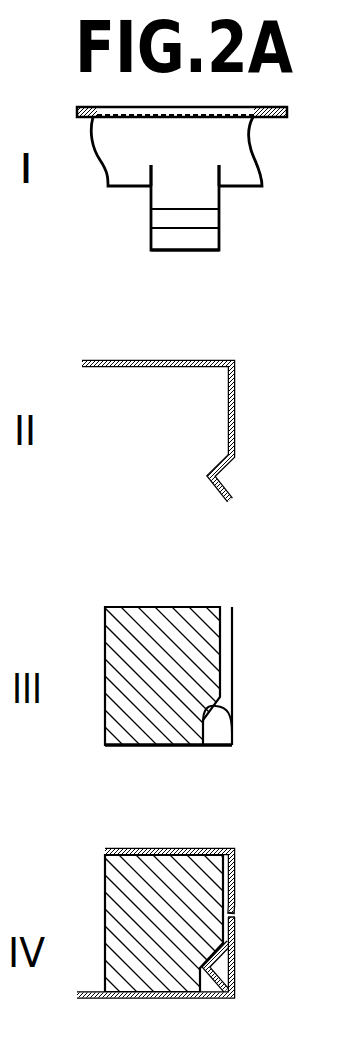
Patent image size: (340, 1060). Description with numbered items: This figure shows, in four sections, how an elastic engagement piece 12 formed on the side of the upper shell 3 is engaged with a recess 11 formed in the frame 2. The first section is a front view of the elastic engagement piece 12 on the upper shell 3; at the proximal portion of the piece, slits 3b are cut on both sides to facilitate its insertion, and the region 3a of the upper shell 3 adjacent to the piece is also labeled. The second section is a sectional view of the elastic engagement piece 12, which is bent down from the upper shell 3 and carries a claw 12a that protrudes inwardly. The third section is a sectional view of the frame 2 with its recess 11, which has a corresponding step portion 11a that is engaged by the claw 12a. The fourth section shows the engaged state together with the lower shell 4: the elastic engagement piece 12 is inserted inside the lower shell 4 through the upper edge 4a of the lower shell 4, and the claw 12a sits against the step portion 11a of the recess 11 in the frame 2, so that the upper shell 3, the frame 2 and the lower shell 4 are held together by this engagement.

The frame 2 is at (160, 733).
The upper shell 3 is at (240, 147).
The engaging hole 3a is at (255, 187).
The slits 3b is at (147, 173).
The lower shell 4 is at (127, 999).
The upper edge of the lower shell 4a is at (234, 917).
The recess 11 is at (225, 637).
The step portion 11a is at (233, 730).
The elastic engagement piece 12 is at (150, 256).
The claw 12a is at (185, 222).